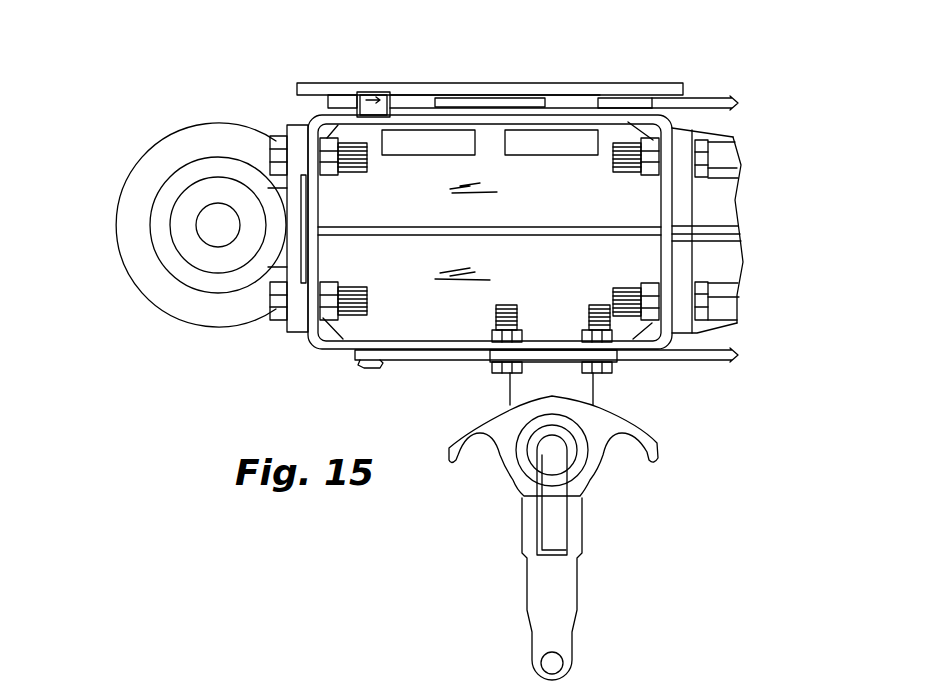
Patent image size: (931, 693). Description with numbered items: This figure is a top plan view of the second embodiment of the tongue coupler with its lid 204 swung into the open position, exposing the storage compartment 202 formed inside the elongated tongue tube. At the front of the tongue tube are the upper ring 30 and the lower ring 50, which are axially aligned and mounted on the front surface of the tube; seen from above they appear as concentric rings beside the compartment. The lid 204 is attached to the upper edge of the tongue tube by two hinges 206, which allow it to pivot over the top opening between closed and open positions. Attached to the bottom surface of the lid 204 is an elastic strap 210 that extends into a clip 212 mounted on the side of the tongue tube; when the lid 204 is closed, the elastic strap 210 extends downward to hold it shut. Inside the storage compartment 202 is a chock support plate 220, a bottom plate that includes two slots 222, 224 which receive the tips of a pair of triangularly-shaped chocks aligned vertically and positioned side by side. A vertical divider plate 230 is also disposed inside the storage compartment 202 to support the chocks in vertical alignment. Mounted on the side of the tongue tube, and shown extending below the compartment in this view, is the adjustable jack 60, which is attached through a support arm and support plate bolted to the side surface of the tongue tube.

The upper ring 30 is at (152, 152).
The lower ring 50 is at (163, 215).
The adjustable jack 60 is at (600, 503).
The storage compartment 202 is at (621, 118).
The lid 204 is at (357, 83).
The hinges 206 is at (388, 93).
The elastic strap 210 is at (308, 118).
The clip 212 is at (373, 370).
The chock support plate 220 is at (622, 270).
The slot 222 is at (433, 147).
The slot 224 is at (527, 147).
The vertical divider plate 230 is at (612, 233).